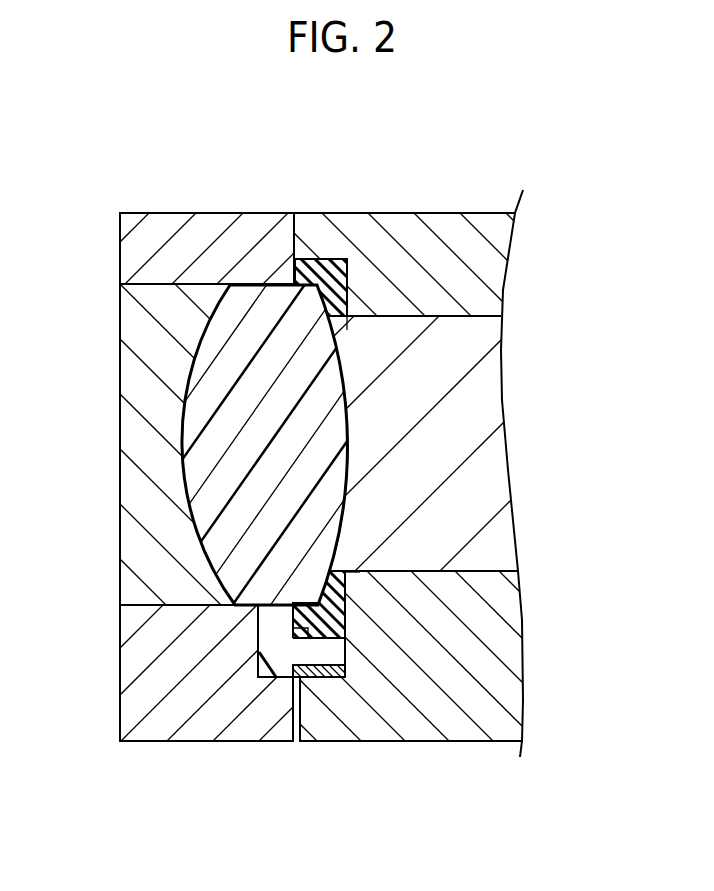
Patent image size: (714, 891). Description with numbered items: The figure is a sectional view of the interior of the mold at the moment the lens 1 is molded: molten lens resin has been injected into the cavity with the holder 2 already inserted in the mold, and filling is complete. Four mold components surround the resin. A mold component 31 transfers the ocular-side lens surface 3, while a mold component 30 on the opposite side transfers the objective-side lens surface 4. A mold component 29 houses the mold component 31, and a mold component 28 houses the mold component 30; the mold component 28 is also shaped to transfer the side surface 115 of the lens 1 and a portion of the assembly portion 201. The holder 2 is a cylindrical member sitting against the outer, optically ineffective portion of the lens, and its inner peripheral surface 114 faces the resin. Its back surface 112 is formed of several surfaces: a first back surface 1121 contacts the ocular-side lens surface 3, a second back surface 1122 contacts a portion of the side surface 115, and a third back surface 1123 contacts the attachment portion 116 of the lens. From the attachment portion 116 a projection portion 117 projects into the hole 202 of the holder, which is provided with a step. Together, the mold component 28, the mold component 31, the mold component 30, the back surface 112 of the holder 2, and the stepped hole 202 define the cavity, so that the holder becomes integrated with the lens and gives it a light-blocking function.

The lens 1 is at (330, 385).
The holder 2 is at (322, 259).
The ocular-side lens surface 3 is at (347, 452).
The objective-side lens surface 4 is at (182, 430).
The mold component 28 is at (135, 254).
The mold component 29 is at (450, 228).
The mold component 30 is at (135, 540).
The mold component 31 is at (505, 544).
The back surface 112 is at (347, 293).
The inner peripheral surface 114 is at (347, 320).
The side surface 115 is at (240, 604).
The attachment portion 116 is at (262, 646).
The projection portion 117 is at (322, 668).
The assembly portion 201 is at (275, 662).
The hole 202 is at (345, 678).
The first back surface 1121 is at (348, 577).
The second back surface 1122 is at (323, 657).
The third back surface 1123 is at (295, 637).